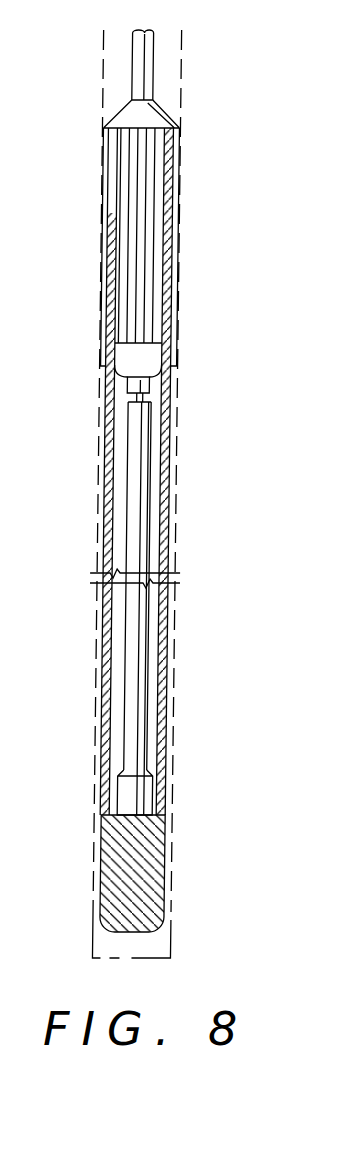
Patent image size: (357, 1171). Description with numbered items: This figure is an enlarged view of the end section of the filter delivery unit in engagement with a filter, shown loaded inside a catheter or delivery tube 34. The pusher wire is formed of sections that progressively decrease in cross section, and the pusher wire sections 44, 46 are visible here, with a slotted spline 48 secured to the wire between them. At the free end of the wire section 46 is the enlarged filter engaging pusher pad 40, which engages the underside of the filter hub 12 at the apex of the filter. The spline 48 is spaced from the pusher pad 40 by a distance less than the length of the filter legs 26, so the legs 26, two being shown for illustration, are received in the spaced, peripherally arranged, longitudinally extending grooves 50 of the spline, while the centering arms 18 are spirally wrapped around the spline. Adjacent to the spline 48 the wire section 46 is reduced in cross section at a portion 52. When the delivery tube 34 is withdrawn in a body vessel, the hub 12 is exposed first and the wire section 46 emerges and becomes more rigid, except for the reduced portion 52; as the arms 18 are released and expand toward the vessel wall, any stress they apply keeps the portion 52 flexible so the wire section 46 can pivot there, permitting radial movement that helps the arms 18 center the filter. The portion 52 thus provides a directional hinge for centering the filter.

The filter hub 12 is at (161, 882).
The centering arms 18 is at (108, 440).
The filter legs 26 is at (181, 487).
The delivery tube 34 is at (183, 945).
The pusher pad 40 is at (148, 798).
The pusher wire section 44 is at (158, 77).
The pusher wire section 46 is at (141, 692).
The slotted spline 48 is at (155, 242).
The grooves 50 is at (144, 187).
The reduced cross section portion 52 is at (168, 395).